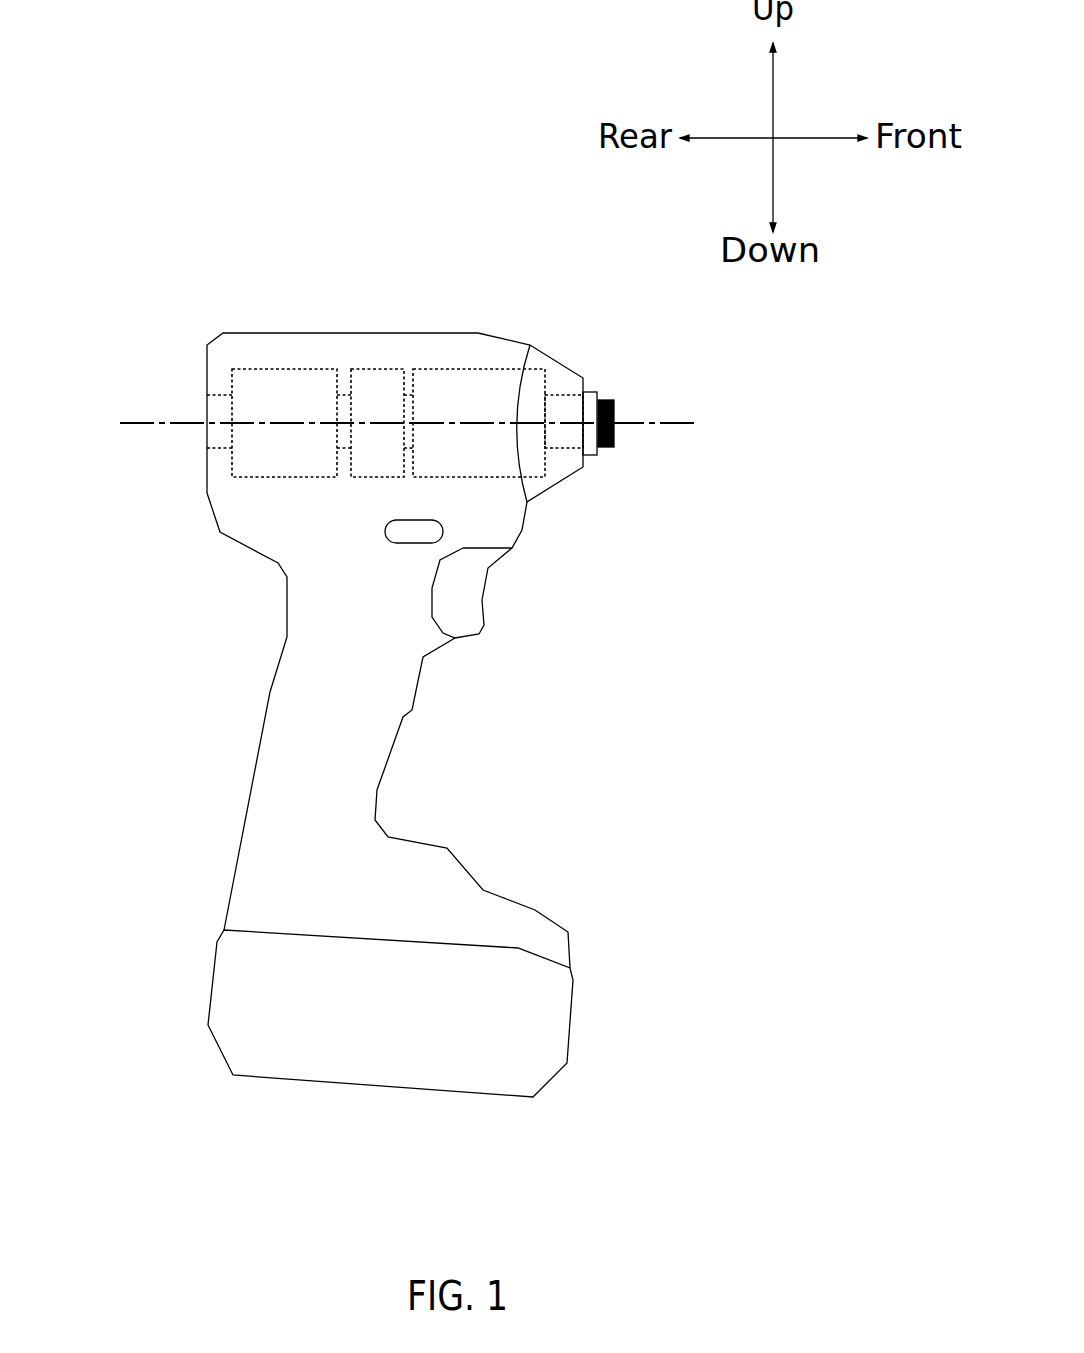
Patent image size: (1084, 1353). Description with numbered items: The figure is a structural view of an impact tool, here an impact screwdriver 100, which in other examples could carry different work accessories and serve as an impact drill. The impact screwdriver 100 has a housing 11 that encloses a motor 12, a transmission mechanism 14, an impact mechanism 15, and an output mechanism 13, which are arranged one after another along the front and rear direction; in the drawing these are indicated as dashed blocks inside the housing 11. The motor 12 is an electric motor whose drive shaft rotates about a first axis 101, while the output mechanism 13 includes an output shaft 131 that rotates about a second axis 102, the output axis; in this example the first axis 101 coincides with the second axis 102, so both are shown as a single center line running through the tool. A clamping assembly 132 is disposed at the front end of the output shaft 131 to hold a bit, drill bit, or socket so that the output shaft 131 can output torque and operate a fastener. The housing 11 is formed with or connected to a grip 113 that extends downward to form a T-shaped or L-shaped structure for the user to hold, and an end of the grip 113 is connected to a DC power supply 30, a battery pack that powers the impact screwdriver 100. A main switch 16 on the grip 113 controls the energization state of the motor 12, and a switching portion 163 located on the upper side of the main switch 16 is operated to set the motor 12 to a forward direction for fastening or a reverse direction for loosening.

The impact screwdriver 100 is at (155, 258).
The housing 11 is at (335, 333).
The motor 12 is at (265, 385).
The transmission mechanism 14 is at (383, 392).
The impact mechanism 15 is at (466, 388).
The output shaft 131 is at (568, 405).
The output mechanism 13 is at (612, 390).
The clamping assembly 132 is at (603, 448).
The first axis 101 is at (240, 425).
The second axis 102 is at (573, 425).
The switching portion 163 is at (425, 528).
The main switch 16 is at (468, 624).
The grip 113 is at (272, 690).
The DC power supply 30 is at (238, 993).